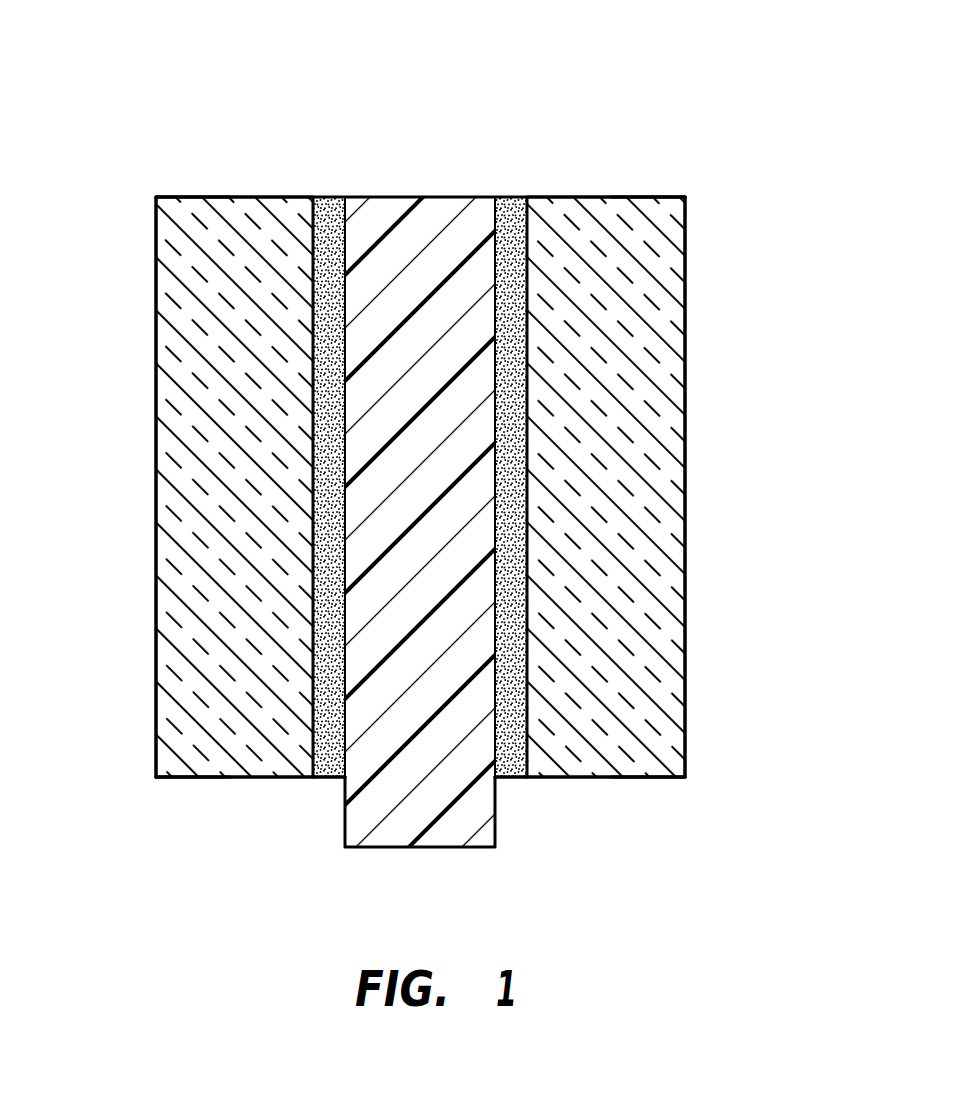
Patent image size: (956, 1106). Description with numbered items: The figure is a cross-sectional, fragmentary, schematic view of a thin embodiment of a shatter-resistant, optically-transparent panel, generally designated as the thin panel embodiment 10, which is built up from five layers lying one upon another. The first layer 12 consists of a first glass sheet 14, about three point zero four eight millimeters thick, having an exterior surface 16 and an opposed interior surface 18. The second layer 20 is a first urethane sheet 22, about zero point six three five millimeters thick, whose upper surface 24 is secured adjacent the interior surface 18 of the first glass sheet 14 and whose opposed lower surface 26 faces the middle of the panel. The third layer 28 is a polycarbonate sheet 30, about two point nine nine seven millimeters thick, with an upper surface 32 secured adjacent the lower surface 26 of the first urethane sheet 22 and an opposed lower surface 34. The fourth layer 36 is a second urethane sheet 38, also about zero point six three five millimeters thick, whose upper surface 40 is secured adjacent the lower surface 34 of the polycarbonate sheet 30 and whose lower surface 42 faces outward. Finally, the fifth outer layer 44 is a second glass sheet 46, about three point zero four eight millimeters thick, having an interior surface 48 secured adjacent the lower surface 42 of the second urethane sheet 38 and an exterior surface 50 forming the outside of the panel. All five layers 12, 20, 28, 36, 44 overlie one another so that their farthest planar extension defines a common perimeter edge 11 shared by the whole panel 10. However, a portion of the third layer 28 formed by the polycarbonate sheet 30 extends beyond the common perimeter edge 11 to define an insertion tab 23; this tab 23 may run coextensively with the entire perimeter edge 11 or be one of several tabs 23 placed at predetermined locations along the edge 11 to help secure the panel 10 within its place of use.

The thin panel embodiment 10 is at (687, 95).
The common perimeter edge 11 is at (193, 197).
The first layer 12 is at (243, 197).
The first glass sheet 14 is at (225, 358).
The exterior surface 16 is at (157, 273).
The interior surface 18 is at (317, 547).
The second layer 20 is at (328, 197).
The first urethane sheet 22 is at (329, 728).
The insertion tab 23 is at (345, 820).
The upper surface 24 is at (313, 452).
The lower surface 26 is at (350, 688).
The third layer 28 is at (433, 197).
The polycarbonate sheet 30 is at (453, 828).
The upper surface 32 is at (343, 584).
The lower surface 34 is at (497, 672).
The fourth layer 36 is at (510, 197).
The second urethane sheet 38 is at (510, 730).
The upper surface 40 is at (495, 380).
The lower surface 42 is at (520, 408).
The fifth outer layer 44 is at (598, 197).
The second glass sheet 46 is at (617, 482).
The interior surface 48 is at (527, 293).
The exterior surface 50 is at (686, 271).